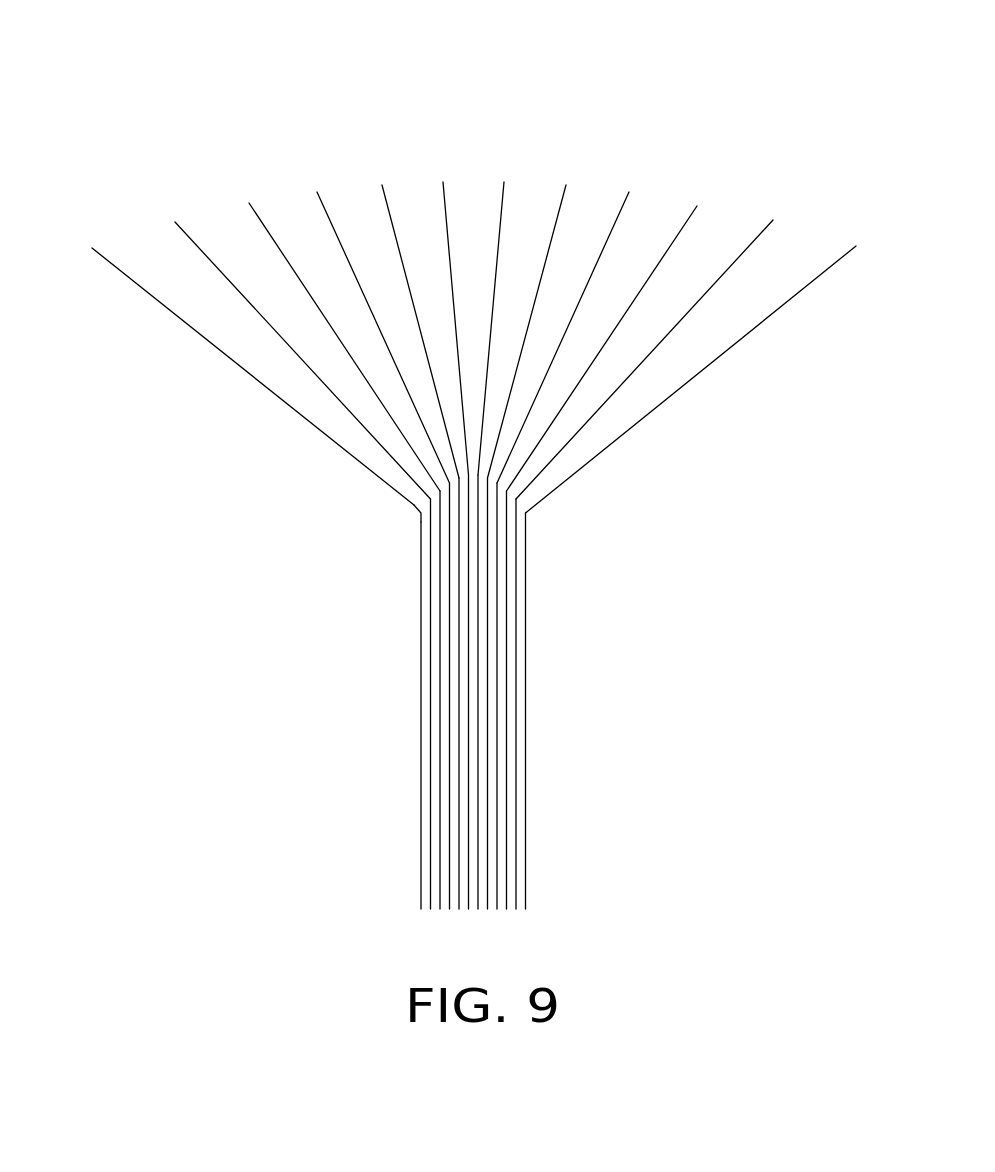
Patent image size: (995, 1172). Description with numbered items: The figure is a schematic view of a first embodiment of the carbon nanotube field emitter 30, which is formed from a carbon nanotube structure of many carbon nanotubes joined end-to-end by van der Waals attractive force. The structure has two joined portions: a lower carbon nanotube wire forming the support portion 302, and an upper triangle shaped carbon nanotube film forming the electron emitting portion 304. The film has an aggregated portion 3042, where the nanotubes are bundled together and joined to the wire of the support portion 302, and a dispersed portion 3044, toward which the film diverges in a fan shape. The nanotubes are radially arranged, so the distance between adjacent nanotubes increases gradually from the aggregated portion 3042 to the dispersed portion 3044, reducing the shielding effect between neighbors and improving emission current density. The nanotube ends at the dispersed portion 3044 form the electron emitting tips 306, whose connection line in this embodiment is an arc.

The carbon nanotube field emitter 30 is at (451, 463).
The support portion 302 is at (420, 597).
The electron emitting portion 304 is at (451, 311).
The aggregated portion 3042 is at (420, 513).
The dispersed portion 3044 is at (114, 268).
The electron emitting tips 306 is at (693, 204).